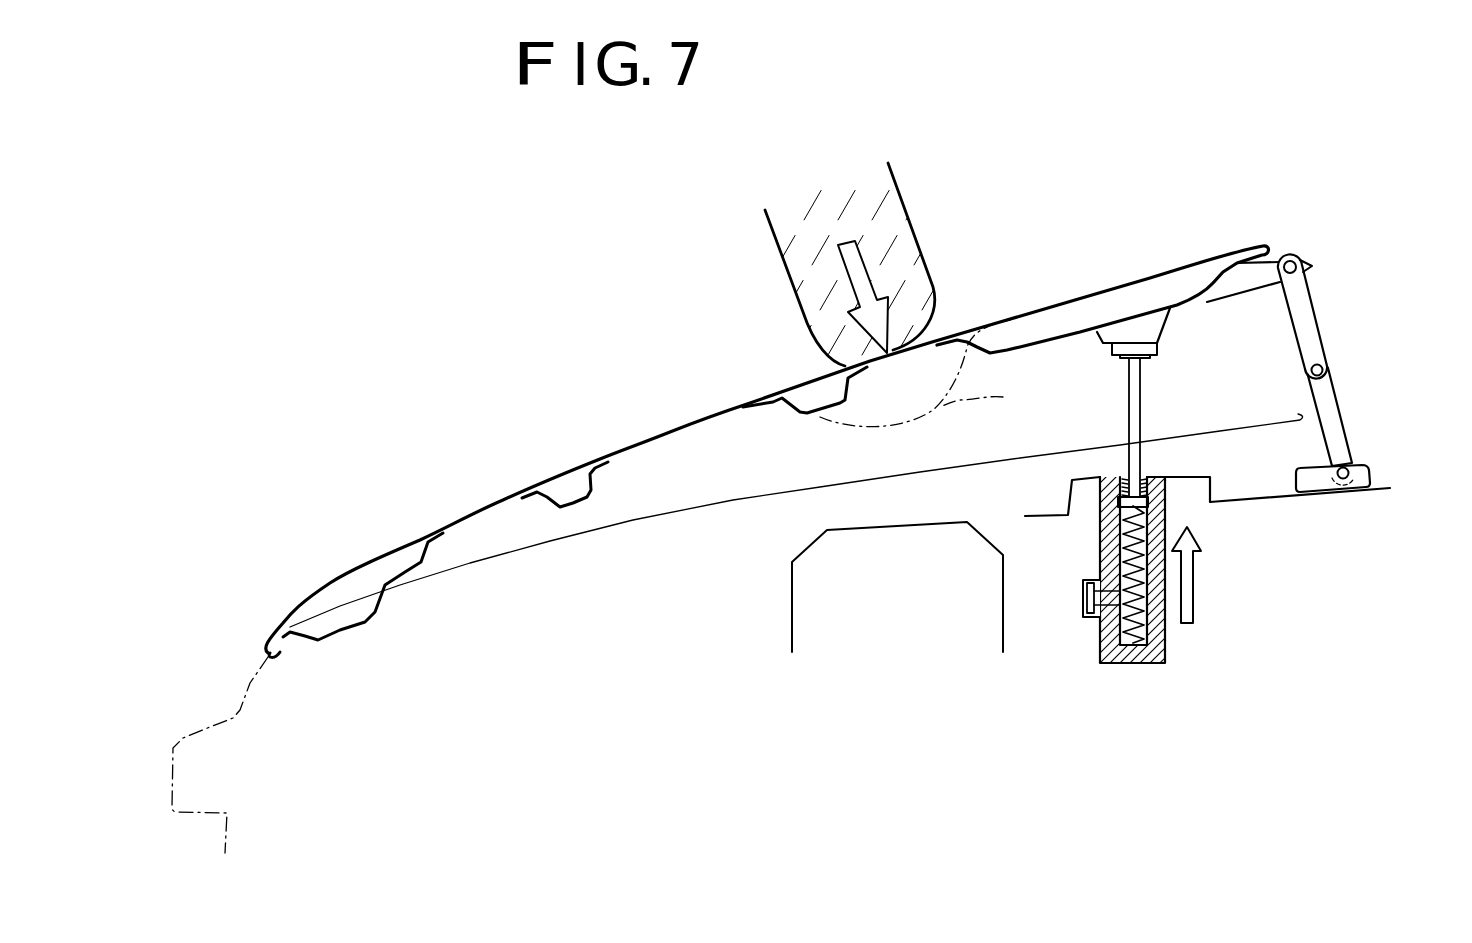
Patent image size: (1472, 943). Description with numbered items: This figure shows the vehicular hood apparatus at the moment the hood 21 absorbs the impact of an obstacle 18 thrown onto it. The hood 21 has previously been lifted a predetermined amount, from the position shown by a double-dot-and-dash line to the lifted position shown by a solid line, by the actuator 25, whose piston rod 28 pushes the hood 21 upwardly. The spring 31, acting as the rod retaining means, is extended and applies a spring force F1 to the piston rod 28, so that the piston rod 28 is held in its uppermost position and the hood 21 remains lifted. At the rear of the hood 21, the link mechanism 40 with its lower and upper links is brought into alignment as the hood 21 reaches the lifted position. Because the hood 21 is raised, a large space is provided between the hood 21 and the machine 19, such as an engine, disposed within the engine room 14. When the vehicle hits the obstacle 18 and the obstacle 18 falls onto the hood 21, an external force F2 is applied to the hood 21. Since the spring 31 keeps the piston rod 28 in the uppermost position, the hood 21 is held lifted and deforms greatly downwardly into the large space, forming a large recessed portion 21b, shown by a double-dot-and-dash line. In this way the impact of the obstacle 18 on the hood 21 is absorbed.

The engine room 14 is at (657, 607).
The obstacle 18 is at (897, 178).
The machine 19 is at (850, 525).
The hood 21 is at (478, 508).
The recessed portion 21b is at (1005, 397).
The actuator 25 is at (1098, 548).
The piston rod 28 is at (1141, 393).
The spring 31 is at (1117, 627).
The link mechanism 40 is at (1313, 303).
The spring force F1 is at (1206, 575).
The external force F2 is at (870, 270).